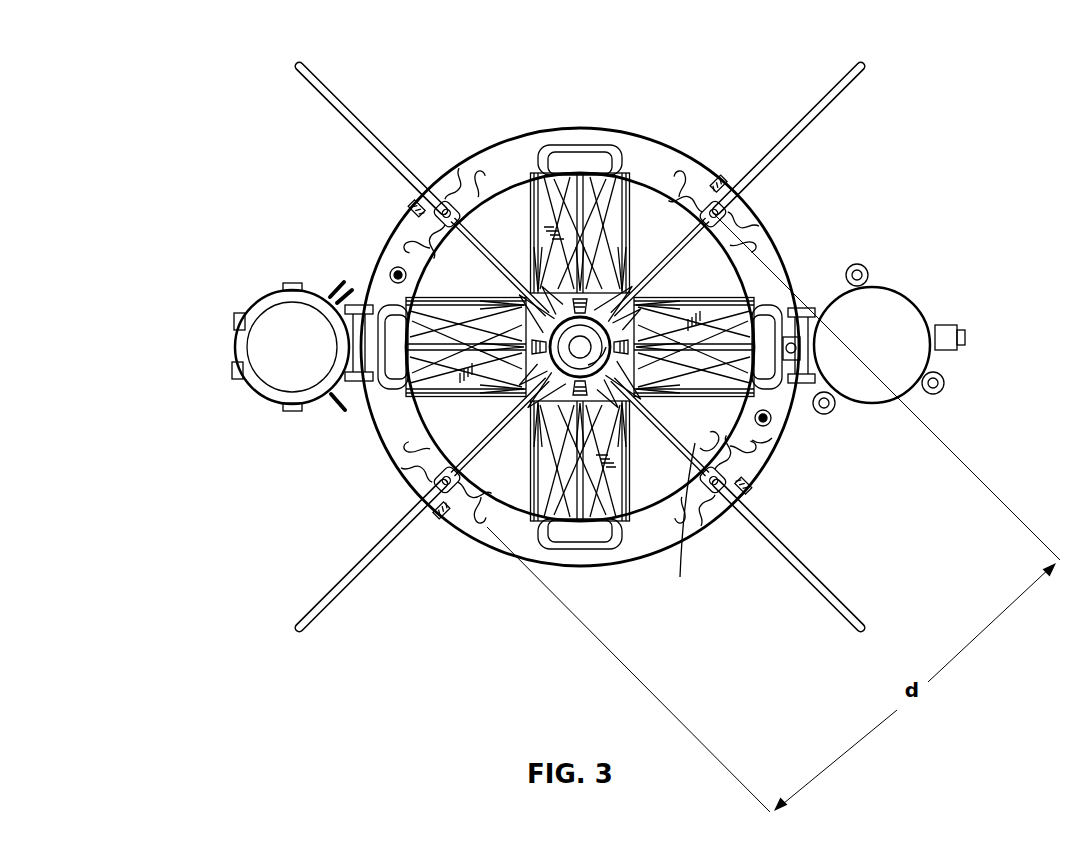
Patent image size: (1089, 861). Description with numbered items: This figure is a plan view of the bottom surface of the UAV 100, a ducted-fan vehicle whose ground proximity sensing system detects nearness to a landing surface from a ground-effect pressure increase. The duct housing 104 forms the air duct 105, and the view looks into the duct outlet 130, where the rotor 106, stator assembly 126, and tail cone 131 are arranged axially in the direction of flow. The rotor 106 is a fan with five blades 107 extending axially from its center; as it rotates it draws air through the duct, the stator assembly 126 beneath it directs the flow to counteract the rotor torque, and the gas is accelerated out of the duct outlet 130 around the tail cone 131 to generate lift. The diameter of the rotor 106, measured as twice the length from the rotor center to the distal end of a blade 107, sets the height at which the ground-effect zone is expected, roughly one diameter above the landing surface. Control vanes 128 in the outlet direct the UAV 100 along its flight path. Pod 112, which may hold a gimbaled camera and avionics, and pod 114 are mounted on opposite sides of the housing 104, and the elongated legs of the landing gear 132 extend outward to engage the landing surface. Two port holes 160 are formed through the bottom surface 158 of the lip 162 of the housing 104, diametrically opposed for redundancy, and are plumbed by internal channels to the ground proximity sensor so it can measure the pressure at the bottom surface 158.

The UAV 100 is at (162, 88).
The housing 104 is at (602, 112).
The bottom surface 158 is at (653, 156).
The duct outlet 130 is at (452, 254).
The control vanes 128 is at (533, 200).
The landing gear 132 is at (322, 88).
The blades 107 is at (713, 260).
The air duct 105 is at (460, 428).
The tail cone 131 is at (647, 395).
The stator assembly 126 is at (652, 452).
The rotor 106 is at (727, 430).
The port holes 160 is at (392, 268).
The lip 162 is at (772, 430).
The pod 114 is at (218, 372).
The pod 112 is at (960, 371).